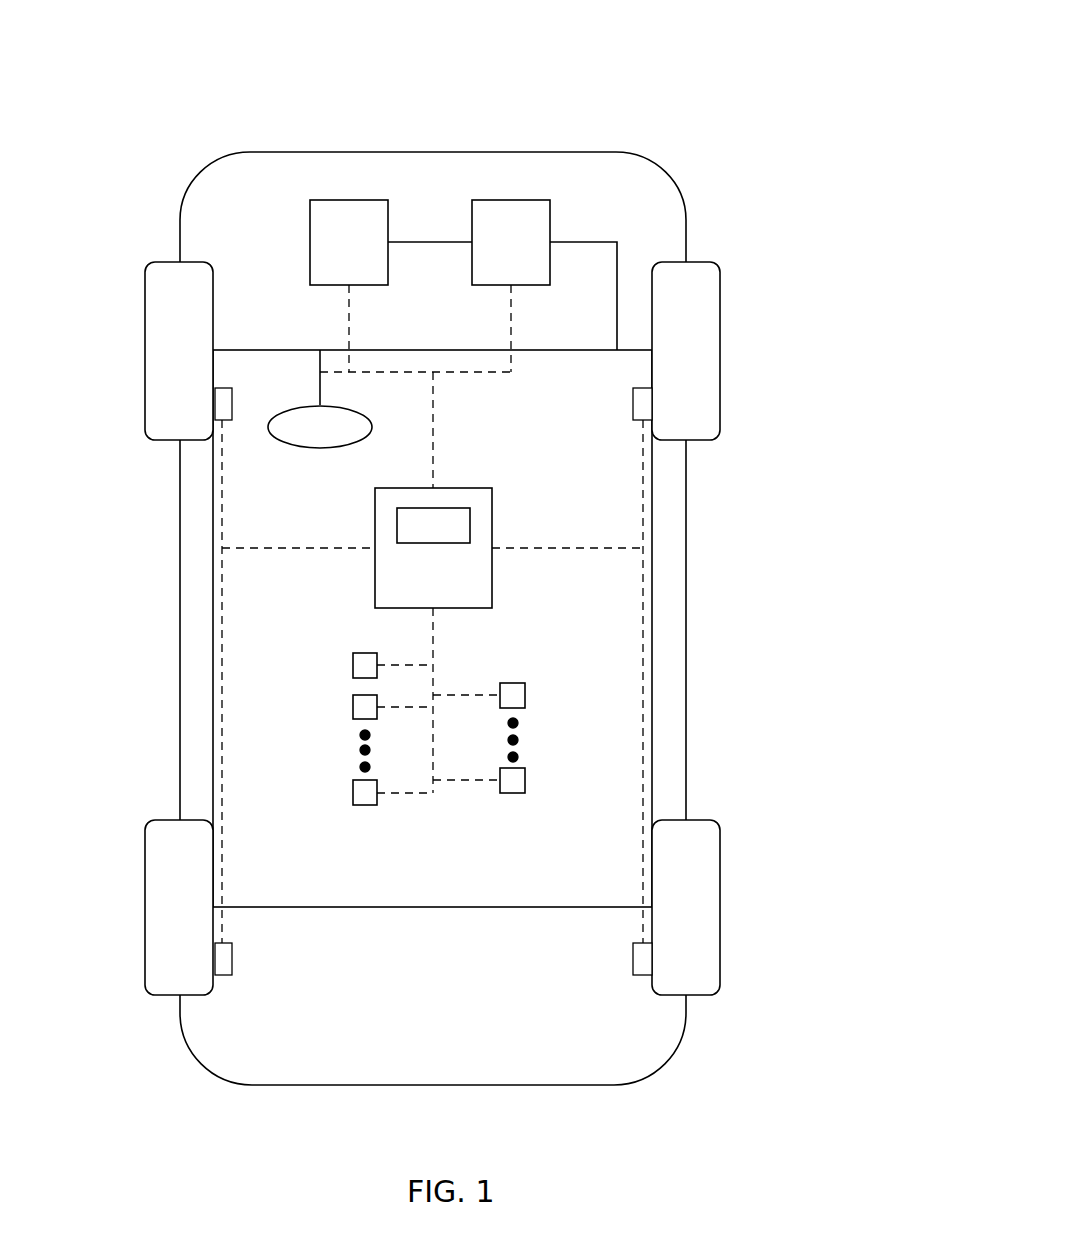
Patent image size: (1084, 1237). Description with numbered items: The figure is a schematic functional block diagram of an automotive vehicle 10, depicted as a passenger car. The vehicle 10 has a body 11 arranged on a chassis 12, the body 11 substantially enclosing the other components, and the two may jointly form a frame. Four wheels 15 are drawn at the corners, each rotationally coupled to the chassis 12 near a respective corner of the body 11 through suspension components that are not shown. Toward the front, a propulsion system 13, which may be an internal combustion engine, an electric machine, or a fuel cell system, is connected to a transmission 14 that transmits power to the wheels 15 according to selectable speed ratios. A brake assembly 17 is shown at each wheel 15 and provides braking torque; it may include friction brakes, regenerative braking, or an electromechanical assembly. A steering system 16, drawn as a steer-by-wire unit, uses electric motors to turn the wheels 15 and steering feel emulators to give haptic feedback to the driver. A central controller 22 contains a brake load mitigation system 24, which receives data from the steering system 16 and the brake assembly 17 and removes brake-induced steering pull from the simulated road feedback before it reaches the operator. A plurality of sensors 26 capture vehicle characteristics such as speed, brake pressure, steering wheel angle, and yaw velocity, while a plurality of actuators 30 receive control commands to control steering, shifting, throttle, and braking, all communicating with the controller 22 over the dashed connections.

The automotive vehicle 10 is at (672, 91).
The body 11 is at (686, 228).
The chassis 12 is at (432, 908).
The propulsion system 13 is at (310, 242).
The transmission 14 is at (550, 220).
The wheels 15 is at (145, 352).
The steering system 16 is at (315, 448).
The brake assembly 17 is at (232, 405).
The controller 22 is at (492, 533).
The brake load mitigation system 24 is at (447, 508).
The sensors 26 is at (353, 665).
The actuators 30 is at (525, 695).